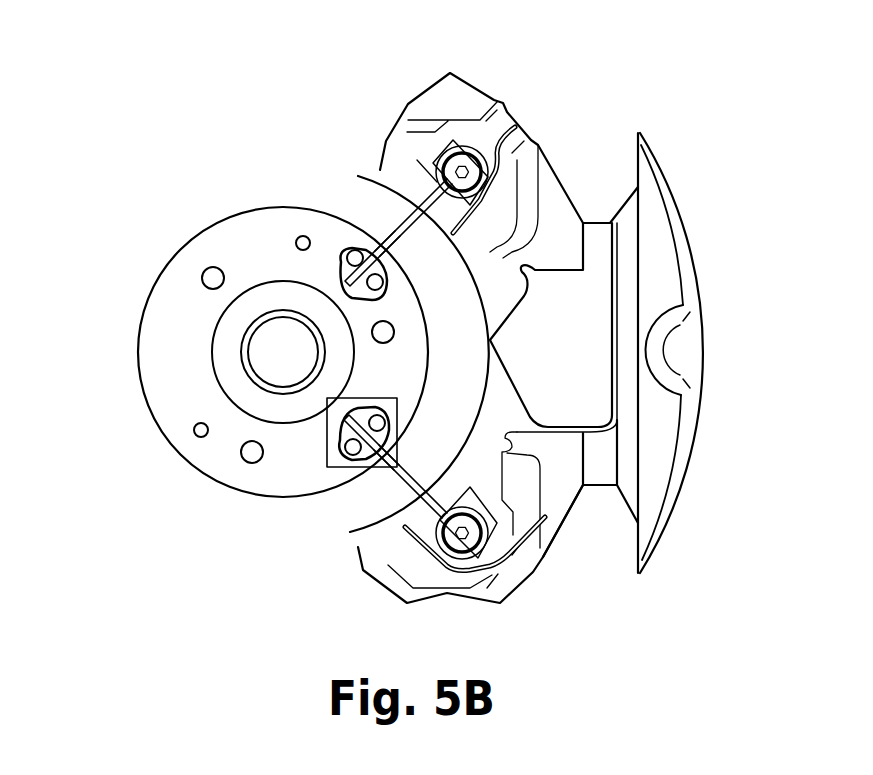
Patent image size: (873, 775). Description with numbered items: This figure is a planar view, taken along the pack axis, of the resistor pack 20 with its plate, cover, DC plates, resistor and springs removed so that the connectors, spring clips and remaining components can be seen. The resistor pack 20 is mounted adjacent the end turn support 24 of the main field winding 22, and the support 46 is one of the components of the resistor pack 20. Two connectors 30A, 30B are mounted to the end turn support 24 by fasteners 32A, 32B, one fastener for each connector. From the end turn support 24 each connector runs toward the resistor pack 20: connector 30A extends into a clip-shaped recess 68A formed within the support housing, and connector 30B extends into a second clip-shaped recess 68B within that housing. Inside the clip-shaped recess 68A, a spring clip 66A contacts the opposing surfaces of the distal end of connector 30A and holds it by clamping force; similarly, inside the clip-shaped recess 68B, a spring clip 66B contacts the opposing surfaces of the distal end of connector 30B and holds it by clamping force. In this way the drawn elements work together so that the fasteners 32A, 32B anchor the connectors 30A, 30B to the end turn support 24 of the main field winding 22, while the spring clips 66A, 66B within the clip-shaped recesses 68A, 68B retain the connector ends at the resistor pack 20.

The resistor pack 20 is at (150, 274).
The main field winding 22 is at (562, 128).
The end turn support 24 is at (648, 257).
The connector 30A is at (410, 203).
The connector 30B is at (430, 505).
The fastener 32A is at (465, 160).
The fastener 32B is at (470, 533).
The support 46 is at (172, 333).
The spring clip 66A is at (355, 240).
The spring clip 66B is at (356, 472).
The clip-shaped recess 68A is at (396, 257).
The clip-shaped recess 68B is at (405, 448).